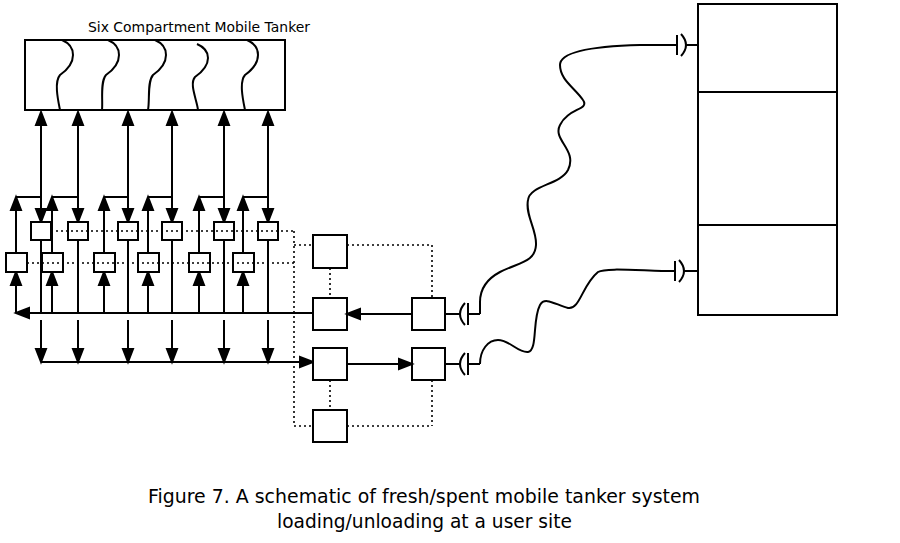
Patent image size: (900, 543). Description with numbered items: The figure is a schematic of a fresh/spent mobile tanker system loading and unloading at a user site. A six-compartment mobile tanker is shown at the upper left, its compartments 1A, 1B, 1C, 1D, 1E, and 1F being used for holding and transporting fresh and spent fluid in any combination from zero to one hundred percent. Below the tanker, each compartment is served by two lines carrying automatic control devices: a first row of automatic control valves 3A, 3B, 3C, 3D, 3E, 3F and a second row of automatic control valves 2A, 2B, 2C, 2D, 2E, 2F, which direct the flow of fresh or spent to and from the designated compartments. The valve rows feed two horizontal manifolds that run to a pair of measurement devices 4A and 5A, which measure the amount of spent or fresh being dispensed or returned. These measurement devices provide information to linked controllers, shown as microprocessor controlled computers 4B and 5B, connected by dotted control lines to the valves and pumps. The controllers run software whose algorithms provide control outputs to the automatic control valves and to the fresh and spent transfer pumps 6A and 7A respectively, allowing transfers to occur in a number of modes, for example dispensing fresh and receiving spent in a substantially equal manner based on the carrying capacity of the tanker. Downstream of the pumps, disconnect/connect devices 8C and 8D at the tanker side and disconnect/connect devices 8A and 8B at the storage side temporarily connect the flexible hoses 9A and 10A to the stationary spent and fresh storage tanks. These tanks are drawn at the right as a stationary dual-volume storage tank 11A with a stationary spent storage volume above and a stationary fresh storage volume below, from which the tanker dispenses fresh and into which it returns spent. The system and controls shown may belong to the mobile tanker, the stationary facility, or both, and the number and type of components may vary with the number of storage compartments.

The compartment 1A is at (45, 143).
The compartment 1B is at (84, 143).
The compartment 1C is at (133, 143).
The compartment 1D is at (179, 143).
The compartment 1E is at (228, 143).
The compartment 1F is at (264, 143).
The automatic control valve 2A is at (16, 262).
The automatic control valve 2B is at (52, 262).
The automatic control valve 2C is at (104, 262).
The automatic control valve 2D is at (148, 262).
The automatic control valve 2E is at (199, 262).
The automatic control valve 2F is at (243, 262).
The automatic control valve 3A is at (41, 231).
The automatic control valve 3B is at (78, 231).
The automatic control valve 3C is at (128, 231).
The automatic control valve 3D is at (172, 231).
The automatic control valve 3E is at (224, 231).
The automatic control valve 3F is at (268, 231).
The measurement device 4A is at (330, 364).
The microprocessor controlled computer 4B is at (330, 426).
The measurement device 5A is at (330, 314).
The microprocessor controlled computer 5B is at (330, 251).
The fresh transfer pump 6A is at (428, 364).
The spent transfer pump 7A is at (428, 314).
The disconnect/connect device 8A is at (678, 36).
The disconnect/connect device 8B is at (679, 262).
The disconnect/connect device 8C is at (463, 299).
The disconnect/connect device 8D is at (464, 377).
The flexible hose 9A is at (571, 179).
The flexible hose 10A is at (571, 317).
The dual-volume storage tank 11A is at (789, 192).